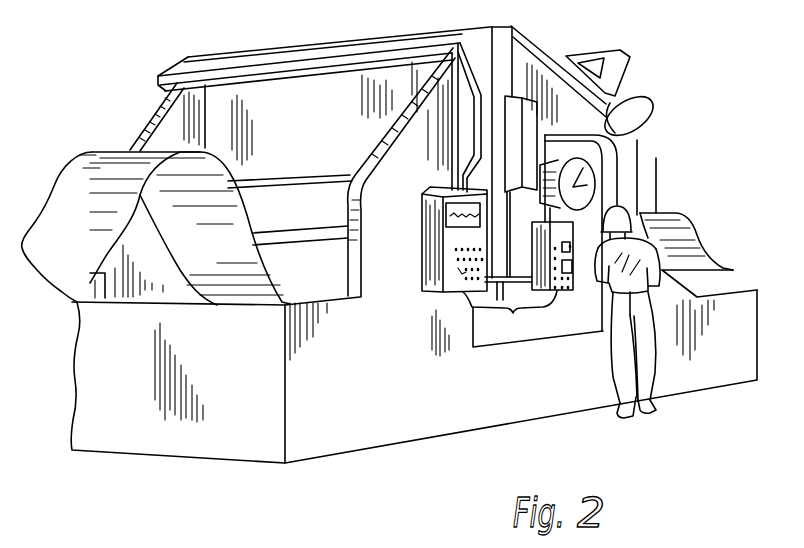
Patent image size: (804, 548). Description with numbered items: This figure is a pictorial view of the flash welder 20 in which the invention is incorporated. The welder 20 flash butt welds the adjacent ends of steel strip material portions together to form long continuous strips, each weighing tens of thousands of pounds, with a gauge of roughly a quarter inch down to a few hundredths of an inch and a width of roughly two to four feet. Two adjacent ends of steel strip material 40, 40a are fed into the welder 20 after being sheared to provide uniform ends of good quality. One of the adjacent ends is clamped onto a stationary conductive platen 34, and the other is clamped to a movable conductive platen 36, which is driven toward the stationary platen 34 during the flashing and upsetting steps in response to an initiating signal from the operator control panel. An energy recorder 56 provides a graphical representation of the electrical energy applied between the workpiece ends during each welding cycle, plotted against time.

The flash welder 20 is at (394, 244).
The steel strip material 40a is at (68, 160).
The steel strip material 40 is at (698, 236).
The energy recorder 56 is at (425, 194).
The stationary conductive platen 34 is at (495, 277).
The movable conductive platen 36 is at (522, 277).